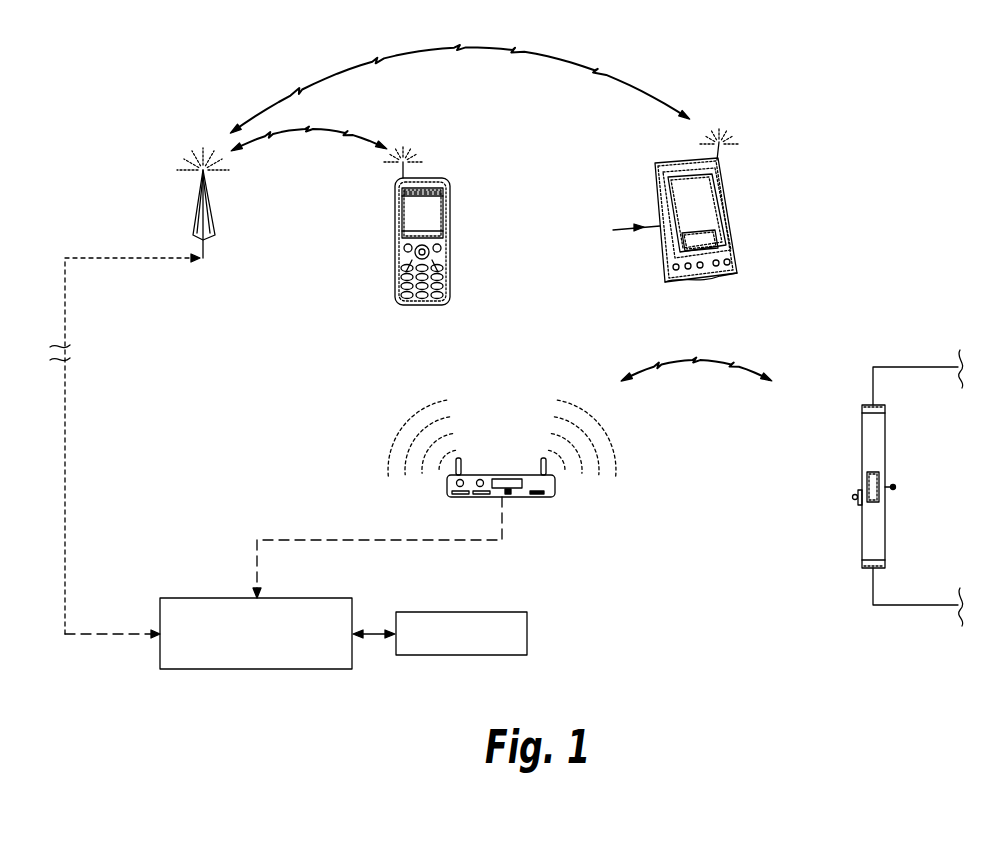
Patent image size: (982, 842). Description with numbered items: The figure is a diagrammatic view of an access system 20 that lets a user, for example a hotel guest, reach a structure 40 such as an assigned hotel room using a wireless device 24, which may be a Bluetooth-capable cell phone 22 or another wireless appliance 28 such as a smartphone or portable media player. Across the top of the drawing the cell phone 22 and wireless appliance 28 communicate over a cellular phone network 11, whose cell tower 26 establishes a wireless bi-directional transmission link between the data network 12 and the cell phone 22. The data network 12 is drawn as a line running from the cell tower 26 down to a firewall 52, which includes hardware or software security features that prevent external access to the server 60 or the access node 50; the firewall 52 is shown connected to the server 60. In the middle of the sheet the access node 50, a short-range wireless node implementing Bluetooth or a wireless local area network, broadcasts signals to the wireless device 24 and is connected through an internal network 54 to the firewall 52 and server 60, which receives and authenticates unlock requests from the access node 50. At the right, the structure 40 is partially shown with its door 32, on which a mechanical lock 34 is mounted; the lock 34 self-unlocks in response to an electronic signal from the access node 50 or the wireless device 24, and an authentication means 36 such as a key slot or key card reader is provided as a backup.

The access system 20 is at (165, 100).
The cellular phone network 11 is at (515, 49).
The data network 12 is at (68, 413).
The cell tower 26 is at (209, 204).
The cell phone 22 is at (452, 215).
The wireless device 24 is at (393, 215).
The wireless appliance 28 is at (737, 233).
The access node 50 is at (557, 485).
The internal network 54 is at (327, 538).
The firewall 52 is at (190, 670).
The server 60 is at (420, 656).
The door 32 is at (861, 428).
The mechanical lock 34 is at (880, 503).
The authentication means 36 is at (857, 505).
The structure 40 is at (973, 478).